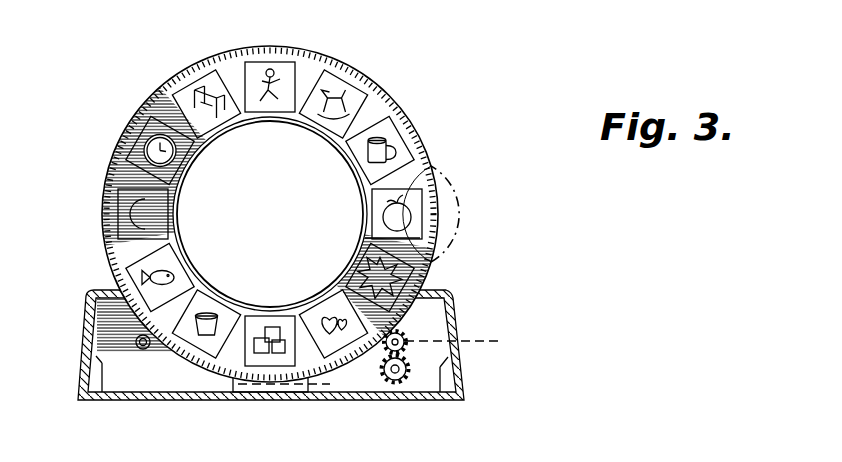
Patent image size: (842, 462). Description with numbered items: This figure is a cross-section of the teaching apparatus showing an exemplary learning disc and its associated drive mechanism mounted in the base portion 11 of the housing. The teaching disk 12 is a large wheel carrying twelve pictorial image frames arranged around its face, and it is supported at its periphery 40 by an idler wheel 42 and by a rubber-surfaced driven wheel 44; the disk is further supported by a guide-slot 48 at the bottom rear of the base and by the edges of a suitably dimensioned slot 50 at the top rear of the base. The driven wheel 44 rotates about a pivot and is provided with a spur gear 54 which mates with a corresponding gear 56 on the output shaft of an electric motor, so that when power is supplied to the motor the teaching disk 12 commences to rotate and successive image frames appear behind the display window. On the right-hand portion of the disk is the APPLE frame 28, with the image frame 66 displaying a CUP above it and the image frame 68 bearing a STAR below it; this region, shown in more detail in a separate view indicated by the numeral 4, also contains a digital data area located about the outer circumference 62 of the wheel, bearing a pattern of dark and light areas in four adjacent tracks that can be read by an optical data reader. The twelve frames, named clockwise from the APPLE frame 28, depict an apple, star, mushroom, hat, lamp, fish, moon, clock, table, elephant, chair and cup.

The base portion 11 is at (78, 398).
The teaching disk 12 is at (142, 100).
The outer circumference 62 is at (378, 87).
The image frame displaying a CUP 66 is at (390, 128).
The FIG. 4 detail indicator 4 is at (450, 214).
The APPLE frame 28 is at (352, 228).
The periphery 40 is at (104, 236).
The slot 50 is at (112, 278).
The image frame bearing a STAR 68 is at (432, 262).
The idler wheel 42 is at (138, 339).
The spur gear 54 is at (408, 340).
The driven wheel 44 is at (461, 341).
The motor gear 56 is at (408, 372).
The guide-slot 48 is at (266, 392).